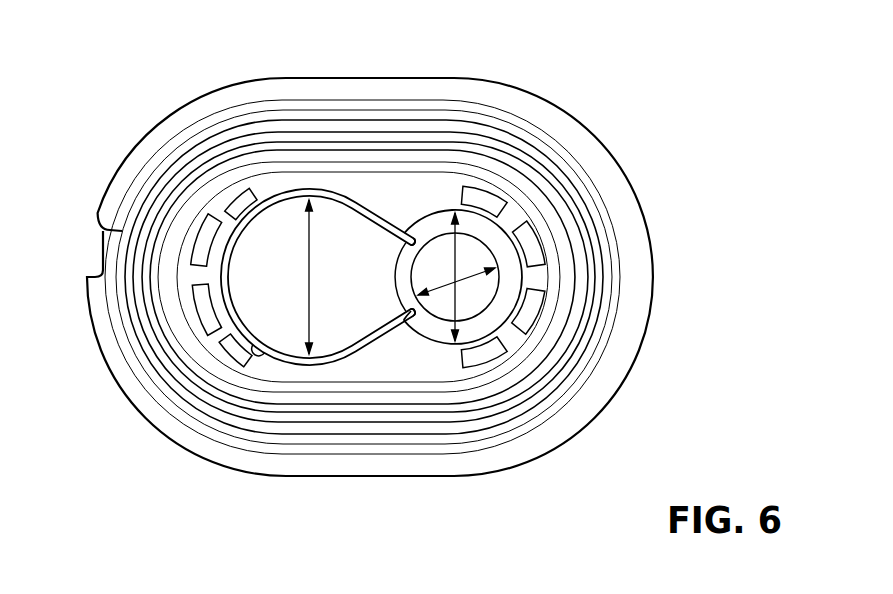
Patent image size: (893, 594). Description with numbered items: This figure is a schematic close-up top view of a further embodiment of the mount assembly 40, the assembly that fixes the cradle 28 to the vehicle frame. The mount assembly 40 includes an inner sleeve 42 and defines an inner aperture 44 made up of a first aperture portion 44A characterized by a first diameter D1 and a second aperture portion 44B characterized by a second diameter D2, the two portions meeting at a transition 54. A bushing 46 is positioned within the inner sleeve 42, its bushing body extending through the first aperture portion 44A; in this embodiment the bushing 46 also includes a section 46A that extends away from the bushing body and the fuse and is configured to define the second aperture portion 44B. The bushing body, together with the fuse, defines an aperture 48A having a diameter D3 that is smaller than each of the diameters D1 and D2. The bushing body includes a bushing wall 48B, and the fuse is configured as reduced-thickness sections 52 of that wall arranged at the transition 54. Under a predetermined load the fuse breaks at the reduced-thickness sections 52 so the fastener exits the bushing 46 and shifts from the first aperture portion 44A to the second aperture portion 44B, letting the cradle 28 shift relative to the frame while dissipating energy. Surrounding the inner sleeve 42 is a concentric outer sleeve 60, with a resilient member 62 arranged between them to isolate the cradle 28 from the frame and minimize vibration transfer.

The mount assembly 40 is at (383, 261).
The cradle 28 is at (618, 362).
The inner sleeve 42 is at (423, 183).
The inner aperture 44 is at (311, 276).
The first aperture portion 44A is at (527, 243).
The second aperture portion 44B is at (233, 343).
The bushing 46 is at (453, 362).
The section 46A is at (320, 367).
The aperture 48A is at (495, 262).
The bushing wall 48B is at (402, 277).
The reduced-thickness section 52 is at (413, 241).
The transition 54 is at (410, 330).
The outer sleeve 60 is at (598, 295).
The resilient member 62 is at (530, 390).
The first diameter D1 is at (447, 257).
The second diameter D2 is at (302, 277).
The diameter D3 is at (470, 287).